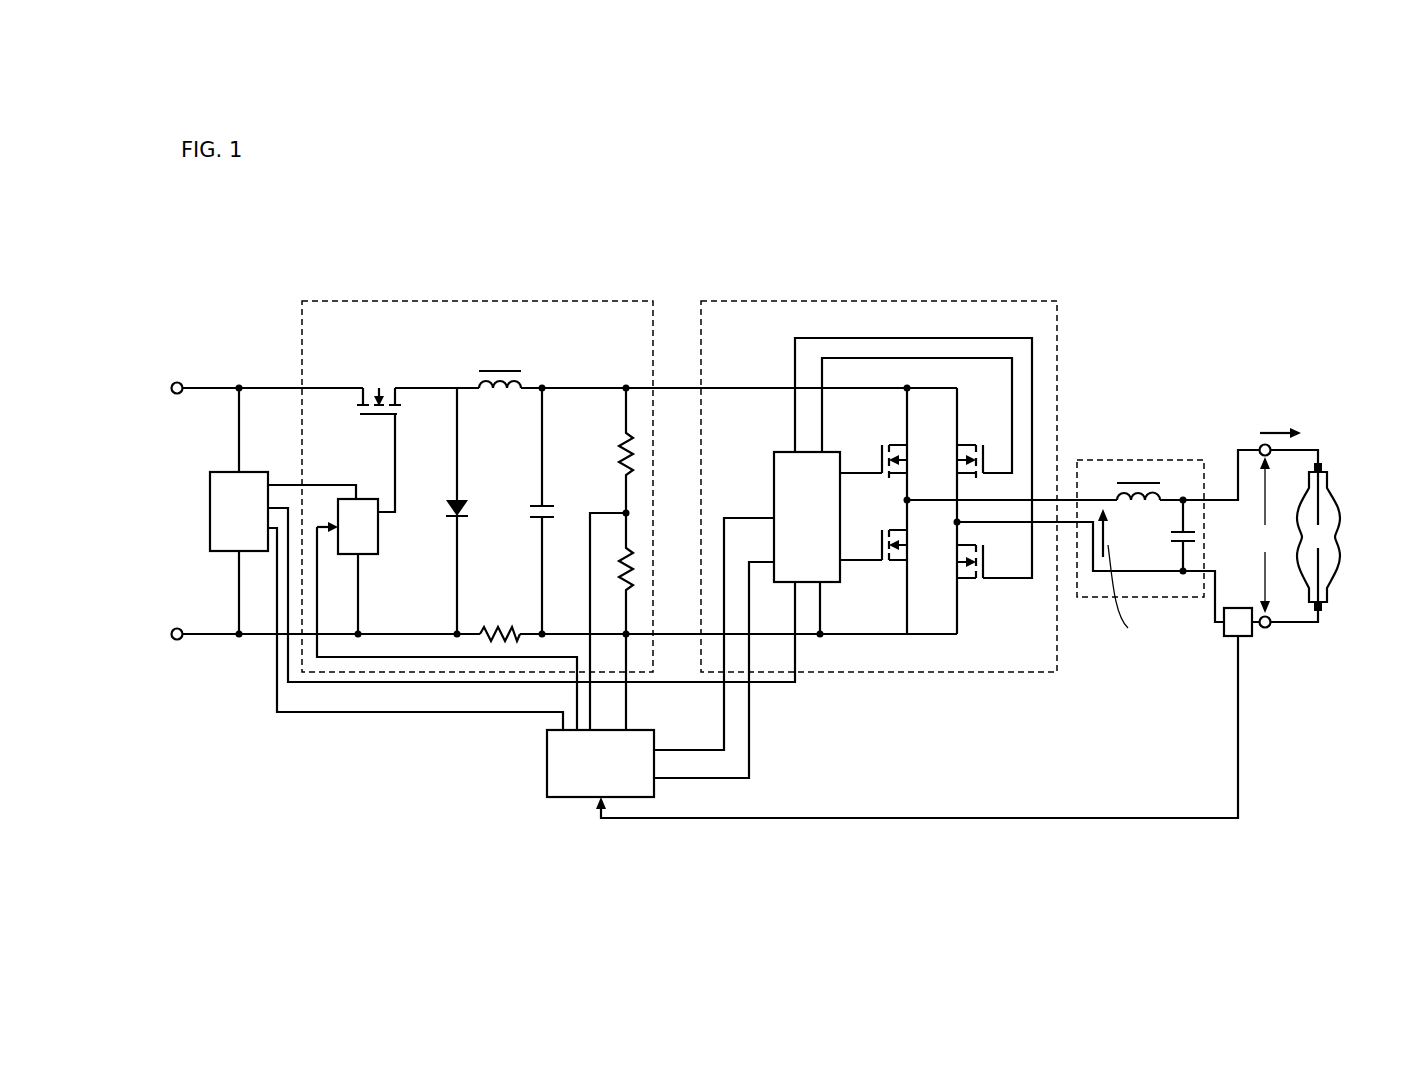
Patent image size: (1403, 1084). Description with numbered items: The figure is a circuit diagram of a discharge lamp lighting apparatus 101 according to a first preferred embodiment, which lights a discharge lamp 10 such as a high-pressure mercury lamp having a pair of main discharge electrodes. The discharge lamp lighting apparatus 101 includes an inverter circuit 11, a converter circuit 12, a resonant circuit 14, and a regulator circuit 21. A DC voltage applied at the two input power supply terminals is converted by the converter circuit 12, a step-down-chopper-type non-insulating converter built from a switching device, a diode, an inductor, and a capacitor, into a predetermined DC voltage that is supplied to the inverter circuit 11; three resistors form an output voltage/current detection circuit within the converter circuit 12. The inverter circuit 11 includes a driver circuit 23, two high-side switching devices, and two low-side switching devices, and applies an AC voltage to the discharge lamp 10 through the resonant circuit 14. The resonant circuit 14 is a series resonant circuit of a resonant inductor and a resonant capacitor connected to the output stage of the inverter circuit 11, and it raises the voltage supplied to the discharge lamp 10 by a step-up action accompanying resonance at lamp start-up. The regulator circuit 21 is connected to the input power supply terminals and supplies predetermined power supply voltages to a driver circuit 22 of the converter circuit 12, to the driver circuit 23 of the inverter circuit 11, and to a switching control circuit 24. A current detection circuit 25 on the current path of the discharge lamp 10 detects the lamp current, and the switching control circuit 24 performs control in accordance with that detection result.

The discharge lamp lighting apparatus 101 is at (756, 523).
The discharge lamp 10 is at (1327, 537).
The inverter circuit 11 is at (975, 257).
The converter circuit 12 is at (562, 257).
The resonant circuit 14 is at (1143, 460).
The regulator circuit 21 is at (212, 472).
The driver circuit 22 is at (379, 556).
The driver circuit 23 is at (773, 452).
The switching control circuit 24 is at (547, 758).
The current detection circuit 25 is at (1252, 636).